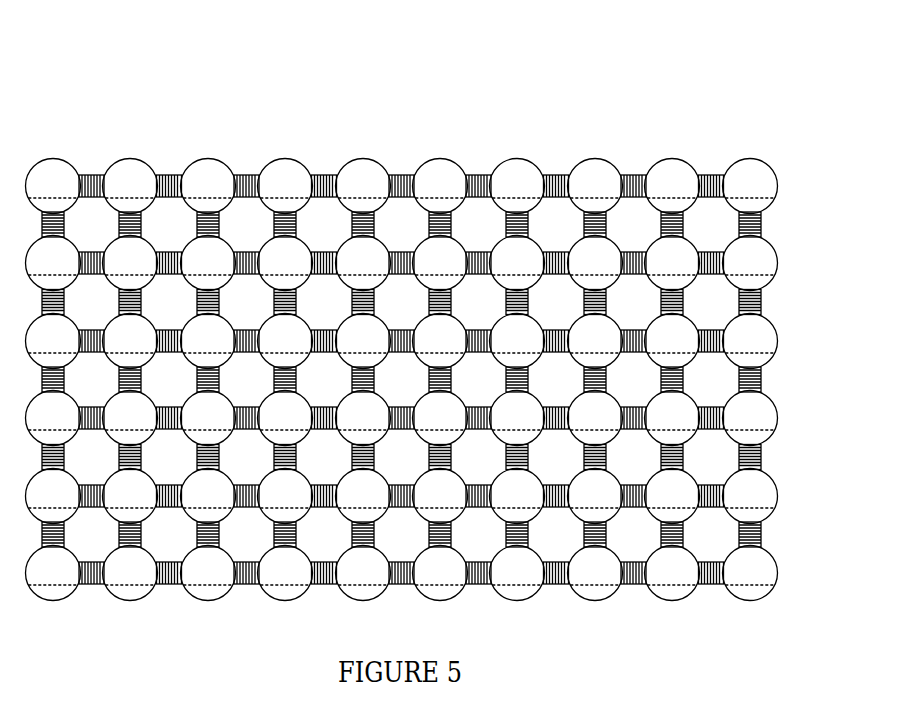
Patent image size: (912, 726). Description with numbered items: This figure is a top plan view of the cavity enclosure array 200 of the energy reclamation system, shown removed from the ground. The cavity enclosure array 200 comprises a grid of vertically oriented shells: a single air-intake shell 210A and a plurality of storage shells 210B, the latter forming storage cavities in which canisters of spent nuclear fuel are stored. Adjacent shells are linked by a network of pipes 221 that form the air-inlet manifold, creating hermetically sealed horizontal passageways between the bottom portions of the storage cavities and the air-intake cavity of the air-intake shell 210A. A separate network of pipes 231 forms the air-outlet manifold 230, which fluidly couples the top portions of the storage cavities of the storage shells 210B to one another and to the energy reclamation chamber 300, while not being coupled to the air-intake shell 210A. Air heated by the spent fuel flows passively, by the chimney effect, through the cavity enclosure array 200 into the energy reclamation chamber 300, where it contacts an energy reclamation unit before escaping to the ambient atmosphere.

The cavity enclosure array 200 is at (740, 92).
The air-intake shell 210A is at (208, 418).
The storage shell 210B is at (402, 380).
The pipe 221 is at (402, 265).
The air-outlet manifold 230 is at (633, 178).
The pipe 231 is at (712, 178).
The energy reclamation chamber 300 is at (750, 418).